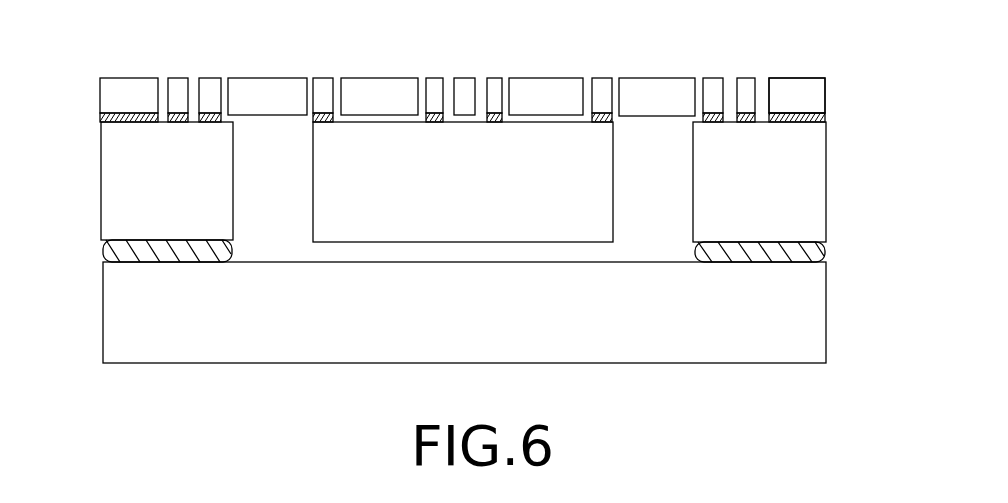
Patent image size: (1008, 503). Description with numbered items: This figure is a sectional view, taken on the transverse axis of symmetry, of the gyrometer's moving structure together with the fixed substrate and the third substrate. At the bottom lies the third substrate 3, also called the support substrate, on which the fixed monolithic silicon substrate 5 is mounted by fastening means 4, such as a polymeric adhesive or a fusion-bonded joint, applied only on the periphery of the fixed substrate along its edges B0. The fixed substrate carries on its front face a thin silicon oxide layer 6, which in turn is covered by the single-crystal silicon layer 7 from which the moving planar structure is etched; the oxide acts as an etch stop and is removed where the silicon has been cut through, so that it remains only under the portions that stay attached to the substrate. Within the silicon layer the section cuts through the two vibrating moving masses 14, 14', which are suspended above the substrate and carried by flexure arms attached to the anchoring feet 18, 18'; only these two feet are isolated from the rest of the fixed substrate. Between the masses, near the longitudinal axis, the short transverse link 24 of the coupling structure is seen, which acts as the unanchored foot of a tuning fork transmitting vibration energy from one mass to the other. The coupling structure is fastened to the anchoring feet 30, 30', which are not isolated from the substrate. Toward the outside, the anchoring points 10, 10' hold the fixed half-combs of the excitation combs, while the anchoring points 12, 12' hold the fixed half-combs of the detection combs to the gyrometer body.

The third substrate 3 is at (826, 327).
The fastening means 4 is at (103, 256).
The fixed monolithic silicon substrate 5 is at (826, 178).
The silicon oxide layer 6 is at (826, 118).
The single-crystal silicon layer 7 is at (826, 98).
The edges of the fixed substrate B0 is at (805, 42).
The anchoring foot of the coupling structure 30 is at (167, 61).
The anchoring point 10 is at (203, 64).
The vibrating moving mass 14 is at (323, 70).
The anchoring foot 18 is at (316, 63).
The anchoring point 12 is at (426, 64).
The transverse link 24 is at (465, 78).
The anchoring point 12' is at (514, 64).
The vibrating moving mass 14' is at (602, 70).
The anchoring foot 18' is at (612, 64).
The anchoring point 10' is at (731, 64).
The anchoring foot of the coupling structure 30' is at (770, 61).